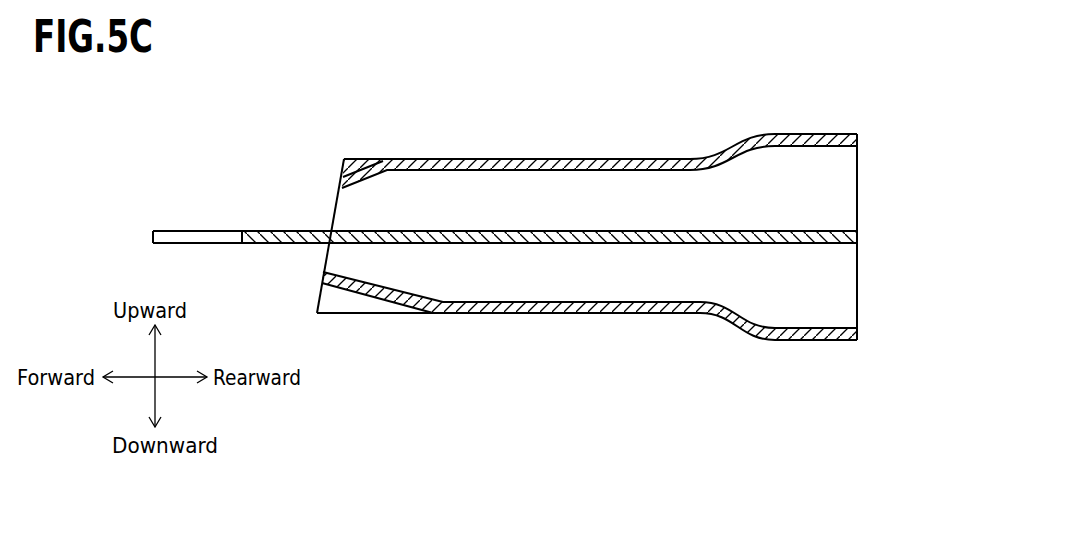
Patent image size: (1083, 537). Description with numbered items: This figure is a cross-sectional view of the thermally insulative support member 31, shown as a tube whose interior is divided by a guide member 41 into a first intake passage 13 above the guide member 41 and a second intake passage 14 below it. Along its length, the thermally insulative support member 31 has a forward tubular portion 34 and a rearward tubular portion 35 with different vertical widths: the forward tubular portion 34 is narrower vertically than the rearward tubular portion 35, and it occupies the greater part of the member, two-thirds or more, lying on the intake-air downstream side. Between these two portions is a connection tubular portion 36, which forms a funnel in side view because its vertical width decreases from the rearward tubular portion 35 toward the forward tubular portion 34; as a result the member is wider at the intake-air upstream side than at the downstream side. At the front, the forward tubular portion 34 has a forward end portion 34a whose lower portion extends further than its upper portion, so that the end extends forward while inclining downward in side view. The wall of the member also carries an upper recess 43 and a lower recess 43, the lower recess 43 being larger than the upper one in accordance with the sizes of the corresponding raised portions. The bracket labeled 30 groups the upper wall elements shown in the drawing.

The first intake passage 13 is at (487, 213).
The second intake passage 14 is at (487, 285).
The duct 30 is at (599, 133).
The thermally insulative support member 31 is at (640, 157).
The guide member 41 is at (760, 228).
The forward tubular portion 34 is at (520, 315).
The forward end portion 34a is at (322, 190).
The rearward tubular portion 35 is at (812, 342).
The connection tubular portion 36 is at (707, 320).
The recess 43 is at (358, 161).